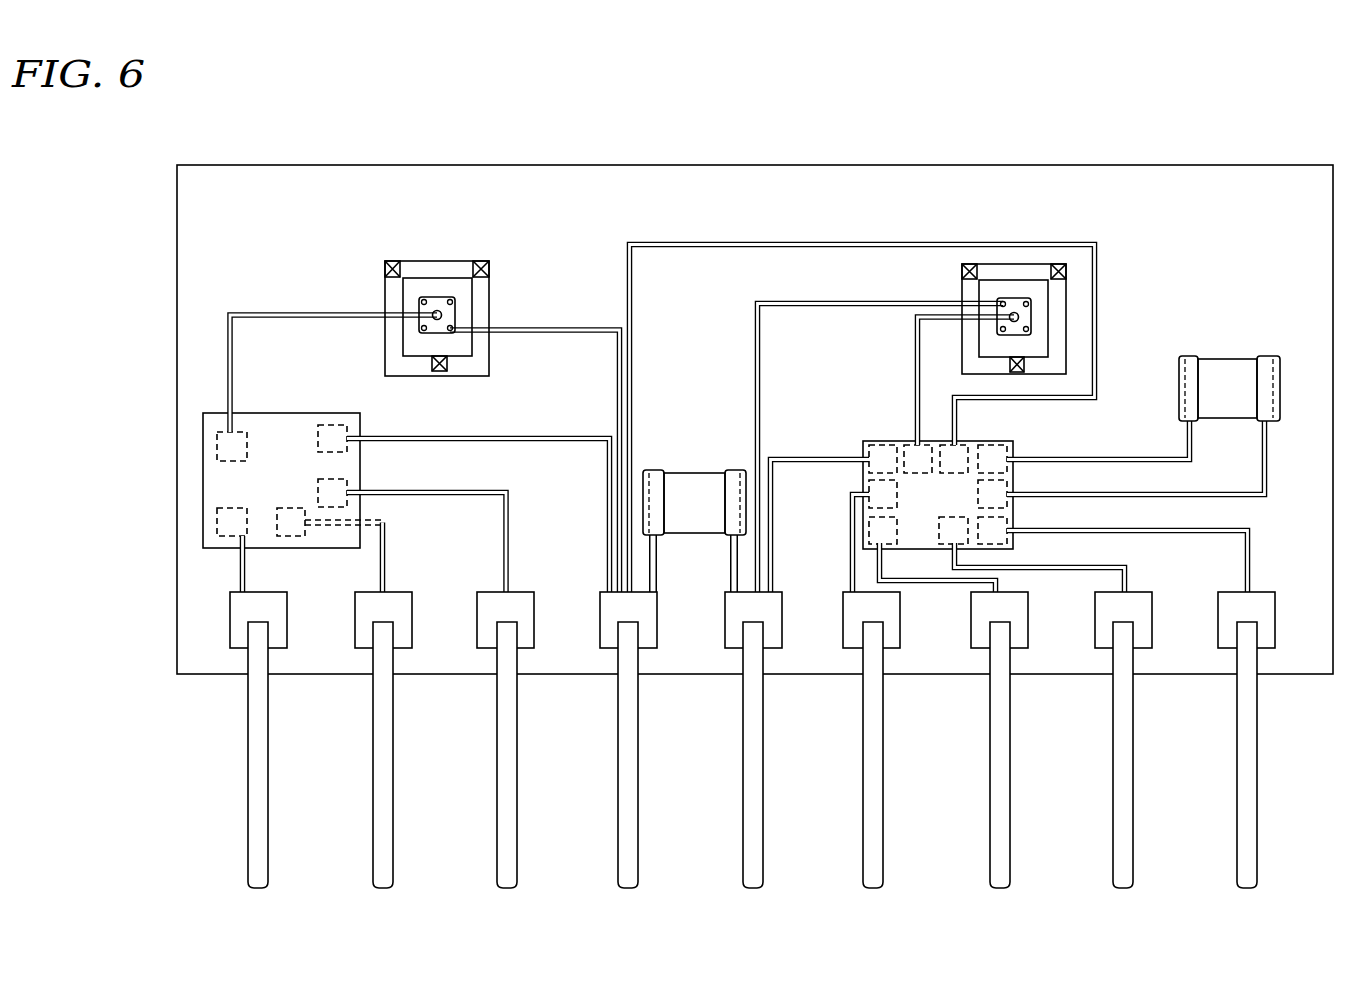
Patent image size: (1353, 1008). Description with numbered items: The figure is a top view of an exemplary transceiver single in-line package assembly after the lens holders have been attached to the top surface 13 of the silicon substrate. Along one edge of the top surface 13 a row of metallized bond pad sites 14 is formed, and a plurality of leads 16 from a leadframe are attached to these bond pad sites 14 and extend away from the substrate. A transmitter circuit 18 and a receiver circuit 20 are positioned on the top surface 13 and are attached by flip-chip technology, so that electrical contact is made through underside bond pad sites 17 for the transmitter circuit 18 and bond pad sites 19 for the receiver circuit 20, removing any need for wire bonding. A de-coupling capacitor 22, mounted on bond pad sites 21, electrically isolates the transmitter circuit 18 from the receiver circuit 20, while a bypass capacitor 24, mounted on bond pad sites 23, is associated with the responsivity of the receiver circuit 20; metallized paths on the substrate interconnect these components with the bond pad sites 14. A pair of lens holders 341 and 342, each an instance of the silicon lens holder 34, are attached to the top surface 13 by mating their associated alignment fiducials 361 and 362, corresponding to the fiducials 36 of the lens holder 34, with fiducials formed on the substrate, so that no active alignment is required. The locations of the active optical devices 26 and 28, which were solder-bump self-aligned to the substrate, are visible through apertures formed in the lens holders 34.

The top surface 13 is at (190, 237).
The bond pad sites 14 is at (240, 623).
The leads 16 is at (260, 802).
The bond pad sites 17 is at (223, 442).
The transmitter circuit 18 is at (227, 471).
The bond pad sites 19 is at (880, 440).
The receiver circuit 20 is at (956, 464).
The bond pad sites 21 is at (655, 480).
The de-coupling capacitor 22 is at (694, 467).
The bond pad sites 23 is at (1192, 365).
The bypass capacitor 24 is at (1227, 352).
The optical device 26 is at (483, 313).
The optical device 28 is at (1025, 318).
The lens holder 34 is at (680, 303).
The first lens holder 341 is at (403, 292).
The second lens holder 342 is at (963, 288).
The alignment fiducials 36 is at (758, 286).
The alignment fiducials of first lens holder 361 is at (481, 262).
The alignment fiducials of second lens holder 362 is at (1058, 264).